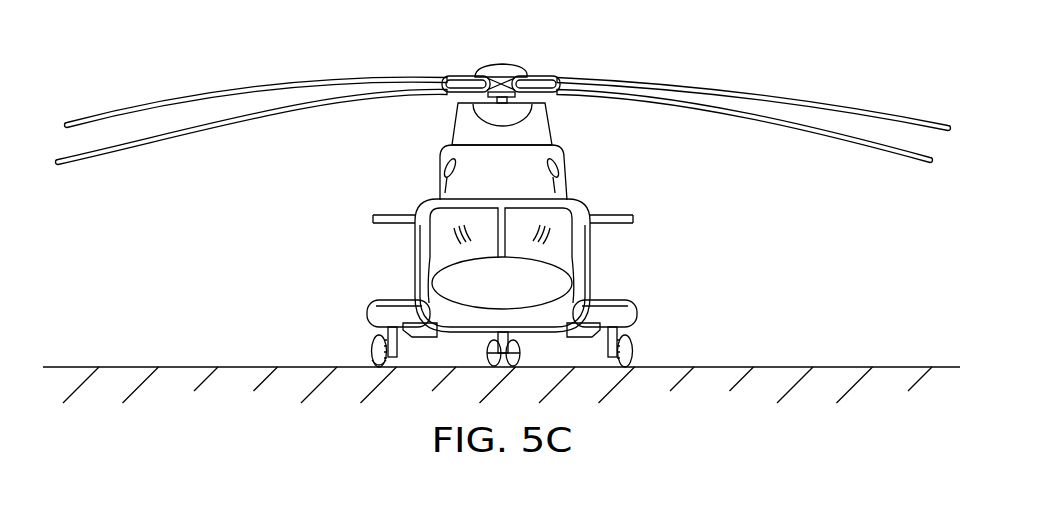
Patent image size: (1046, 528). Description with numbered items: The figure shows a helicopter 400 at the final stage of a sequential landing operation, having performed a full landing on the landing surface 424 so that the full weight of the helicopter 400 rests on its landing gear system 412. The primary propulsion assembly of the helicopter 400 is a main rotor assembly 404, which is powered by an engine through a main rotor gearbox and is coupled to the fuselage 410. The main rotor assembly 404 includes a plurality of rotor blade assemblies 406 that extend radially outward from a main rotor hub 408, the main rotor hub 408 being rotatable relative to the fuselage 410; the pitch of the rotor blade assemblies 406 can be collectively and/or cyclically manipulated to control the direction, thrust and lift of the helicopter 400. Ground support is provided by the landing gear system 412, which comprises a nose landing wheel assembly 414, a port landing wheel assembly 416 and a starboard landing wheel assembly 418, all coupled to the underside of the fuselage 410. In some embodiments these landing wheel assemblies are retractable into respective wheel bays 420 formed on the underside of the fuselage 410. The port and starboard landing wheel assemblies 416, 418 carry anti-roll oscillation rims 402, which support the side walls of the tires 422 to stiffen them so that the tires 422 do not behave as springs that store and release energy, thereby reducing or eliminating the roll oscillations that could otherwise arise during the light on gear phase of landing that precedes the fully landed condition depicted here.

The helicopter 400 is at (180, 76).
The anti-roll oscillation rims 402 is at (637, 342).
The main rotor assembly 404 is at (478, 62).
The rotor blade assemblies 406 is at (878, 110).
The main rotor hub 408 is at (522, 72).
The fuselage 410 is at (590, 275).
The landing gear system 412 is at (643, 358).
The nose landing wheel assembly 414 is at (530, 342).
The port landing wheel assembly 416 is at (632, 338).
The starboard landing wheel assembly 418 is at (372, 346).
The wheel bays 420 is at (370, 323).
The tires 422 is at (378, 368).
The landing surface 424 is at (840, 367).